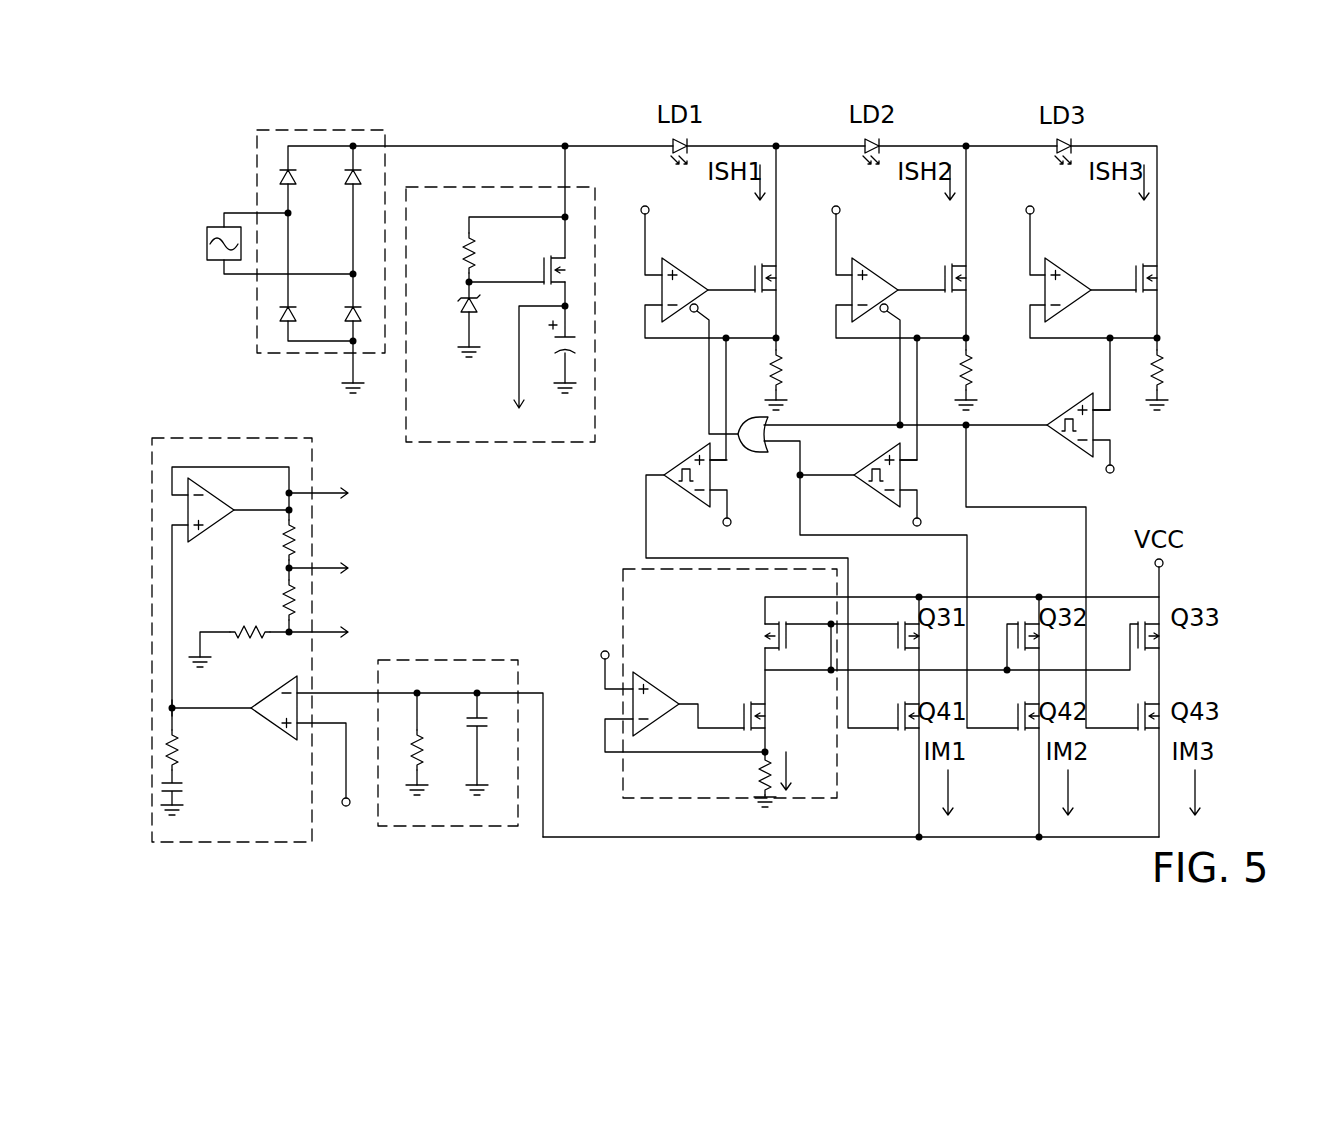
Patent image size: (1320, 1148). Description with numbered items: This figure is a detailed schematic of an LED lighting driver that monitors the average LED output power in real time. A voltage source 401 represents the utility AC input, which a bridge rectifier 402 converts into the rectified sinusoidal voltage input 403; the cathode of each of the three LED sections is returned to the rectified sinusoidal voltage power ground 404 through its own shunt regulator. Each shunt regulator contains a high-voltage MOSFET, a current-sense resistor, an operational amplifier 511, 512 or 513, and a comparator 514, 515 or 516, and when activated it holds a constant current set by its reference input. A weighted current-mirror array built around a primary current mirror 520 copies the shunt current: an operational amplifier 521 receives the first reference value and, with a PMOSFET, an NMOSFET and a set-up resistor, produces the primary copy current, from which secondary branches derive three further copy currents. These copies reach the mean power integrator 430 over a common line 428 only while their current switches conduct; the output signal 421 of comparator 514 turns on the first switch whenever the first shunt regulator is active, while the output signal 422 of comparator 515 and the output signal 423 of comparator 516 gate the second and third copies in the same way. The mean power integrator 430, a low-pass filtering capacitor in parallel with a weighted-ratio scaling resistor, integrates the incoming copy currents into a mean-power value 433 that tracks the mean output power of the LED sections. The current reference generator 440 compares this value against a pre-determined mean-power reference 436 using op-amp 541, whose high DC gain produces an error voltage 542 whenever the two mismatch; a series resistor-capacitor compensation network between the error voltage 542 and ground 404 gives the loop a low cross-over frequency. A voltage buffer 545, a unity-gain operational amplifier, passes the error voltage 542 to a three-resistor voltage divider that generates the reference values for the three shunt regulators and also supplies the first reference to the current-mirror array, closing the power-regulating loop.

The voltage source 401 is at (224, 224).
The bridge rectifier 402 is at (385, 133).
The rectified sinusoidal voltage input VIN 403 is at (627, 142).
The rectified sinusoidal voltage power ground 404 is at (352, 366).
The output signal of comparator 514 421 is at (765, 569).
The output signal of comparator 515 422 is at (886, 485).
The output signal of comparator 516 423 is at (1052, 542).
The common output line 428 is at (870, 835).
The mean power integrator 430 is at (463, 657).
The mean-power value (MPV) 433 is at (345, 692).
The mean-power reference (MPR) value 436 is at (346, 815).
The current reference generator 440 is at (283, 630).
The operational amplifier 511 is at (687, 269).
The operational amplifier 512 is at (877, 269).
The operational amplifier 513 is at (1079, 269).
The comparator 514 is at (688, 490).
The comparator 515 is at (875, 486).
The comparator 516 is at (1065, 444).
The primary current mirror 520 is at (839, 684).
The operational amplifier 521 is at (663, 670).
The op-amp 541 is at (283, 733).
The error voltage 542 is at (174, 693).
The voltage buffer 545 is at (213, 542).